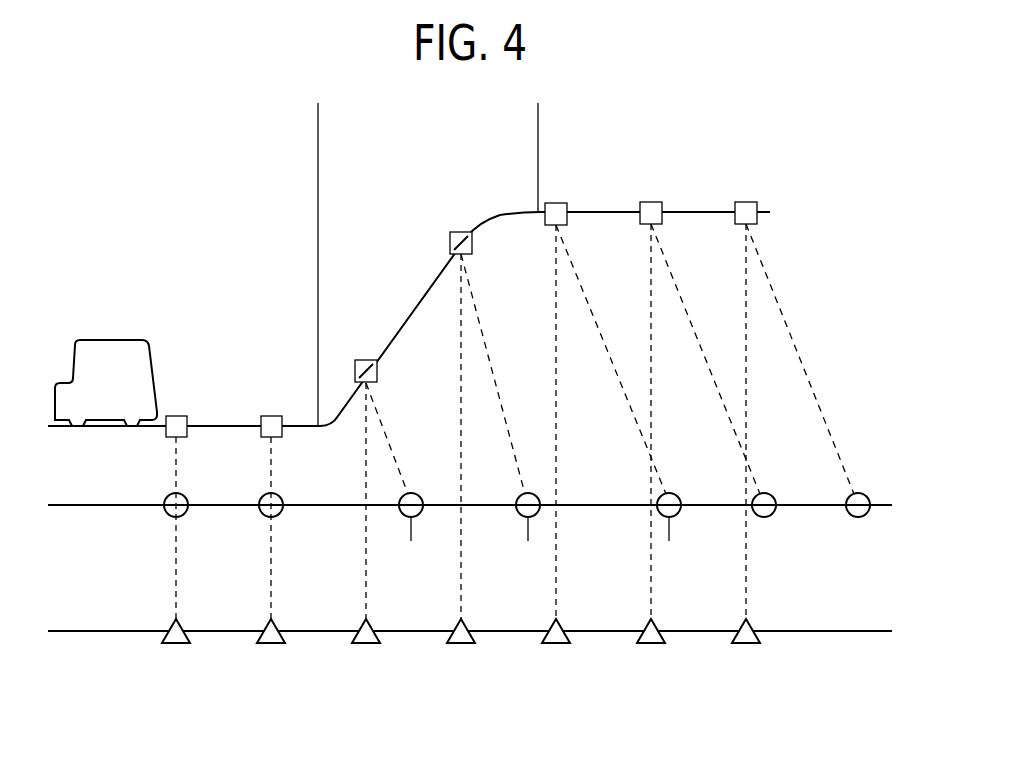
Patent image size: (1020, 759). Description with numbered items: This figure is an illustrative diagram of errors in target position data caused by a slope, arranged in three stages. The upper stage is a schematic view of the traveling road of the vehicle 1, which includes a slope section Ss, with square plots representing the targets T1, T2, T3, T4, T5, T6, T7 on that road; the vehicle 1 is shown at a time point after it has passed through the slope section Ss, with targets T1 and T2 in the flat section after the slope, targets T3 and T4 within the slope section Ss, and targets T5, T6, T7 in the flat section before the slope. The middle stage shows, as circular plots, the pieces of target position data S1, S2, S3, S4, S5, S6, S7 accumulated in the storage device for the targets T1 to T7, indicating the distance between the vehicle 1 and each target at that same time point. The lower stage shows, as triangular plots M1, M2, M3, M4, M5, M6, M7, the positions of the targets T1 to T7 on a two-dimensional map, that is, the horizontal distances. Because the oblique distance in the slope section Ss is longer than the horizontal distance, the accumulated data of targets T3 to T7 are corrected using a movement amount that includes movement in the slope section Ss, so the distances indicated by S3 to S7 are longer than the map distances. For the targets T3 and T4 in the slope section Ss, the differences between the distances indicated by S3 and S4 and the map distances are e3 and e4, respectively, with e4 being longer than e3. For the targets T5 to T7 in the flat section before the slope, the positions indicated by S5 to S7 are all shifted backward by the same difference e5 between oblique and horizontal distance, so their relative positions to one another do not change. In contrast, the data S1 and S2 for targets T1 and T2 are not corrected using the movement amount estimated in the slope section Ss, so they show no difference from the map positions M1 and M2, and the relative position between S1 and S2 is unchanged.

The vehicle 1 is at (113, 340).
The slope section Ss is at (538, 113).
The target T1 is at (176, 416).
The target T2 is at (271, 416).
The target T3 is at (366, 360).
The target T4 is at (461, 232).
The target T5 is at (556, 203).
The target T6 is at (651, 202).
The target T7 is at (746, 202).
The target position data S1 is at (184, 494).
The target position data S2 is at (279, 494).
The target position data S3 is at (419, 494).
The target position data S4 is at (536, 494).
The target position data S5 is at (677, 494).
The target position data S6 is at (772, 494).
The target position data S7 is at (866, 494).
The difference e3 is at (366, 535).
The difference e4 is at (461, 535).
The difference e5 is at (556, 535).
The position of target on map M1 is at (178, 645).
The position of target on map M2 is at (273, 645).
The position of target on map M3 is at (368, 645).
The position of target on map M4 is at (463, 645).
The position of target on map M5 is at (558, 645).
The position of target on map M6 is at (653, 645).
The position of target on map M7 is at (748, 645).